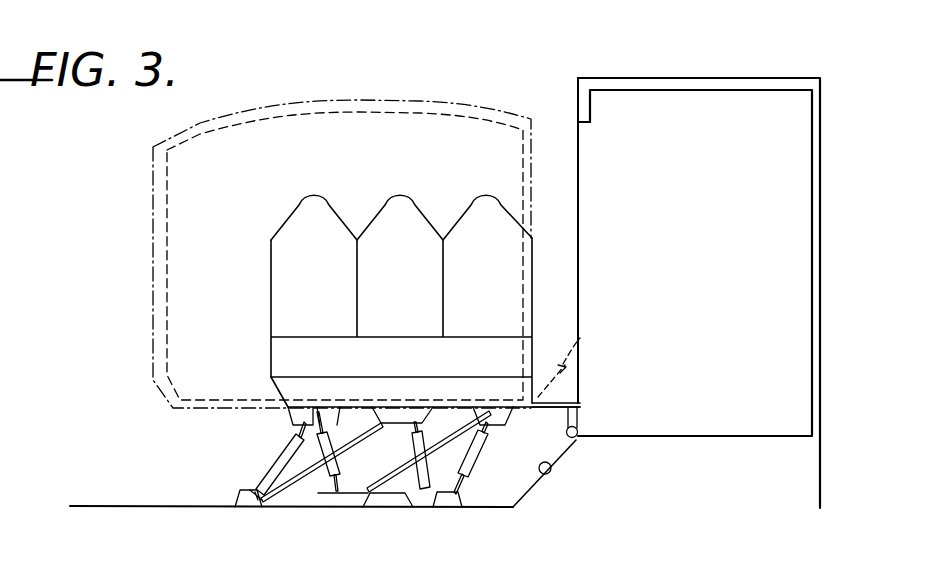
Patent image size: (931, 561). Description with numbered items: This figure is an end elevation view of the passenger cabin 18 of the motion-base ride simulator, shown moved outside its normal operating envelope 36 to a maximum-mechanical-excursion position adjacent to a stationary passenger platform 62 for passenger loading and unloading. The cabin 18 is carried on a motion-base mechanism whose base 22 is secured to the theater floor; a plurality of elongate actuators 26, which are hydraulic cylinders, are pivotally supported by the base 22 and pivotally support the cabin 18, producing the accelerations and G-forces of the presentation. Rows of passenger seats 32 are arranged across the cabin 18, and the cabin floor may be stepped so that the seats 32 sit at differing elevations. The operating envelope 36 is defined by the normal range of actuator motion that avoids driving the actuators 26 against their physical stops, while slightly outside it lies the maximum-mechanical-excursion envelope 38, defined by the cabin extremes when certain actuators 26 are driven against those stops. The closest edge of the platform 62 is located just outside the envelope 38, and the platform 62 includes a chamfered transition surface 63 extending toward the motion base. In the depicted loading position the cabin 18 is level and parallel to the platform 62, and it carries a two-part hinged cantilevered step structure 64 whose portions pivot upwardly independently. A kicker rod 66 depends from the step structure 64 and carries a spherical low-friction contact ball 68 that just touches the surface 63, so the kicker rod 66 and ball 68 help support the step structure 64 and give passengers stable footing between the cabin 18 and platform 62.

The passenger cabin 18 is at (284, 390).
The base 22 is at (307, 508).
The elongate actuators 26 is at (300, 470).
The passenger seats 32 is at (395, 197).
The operating envelope 36 is at (382, 112).
The maximum-mechanical-excursion envelope 38 is at (419, 100).
The stationary passenger platform 62 is at (707, 433).
The chamfered transition surface 63 is at (551, 470).
The step structure 64 is at (580, 391).
The kicker rods 66 is at (563, 415).
The contact ball 68 is at (580, 431).